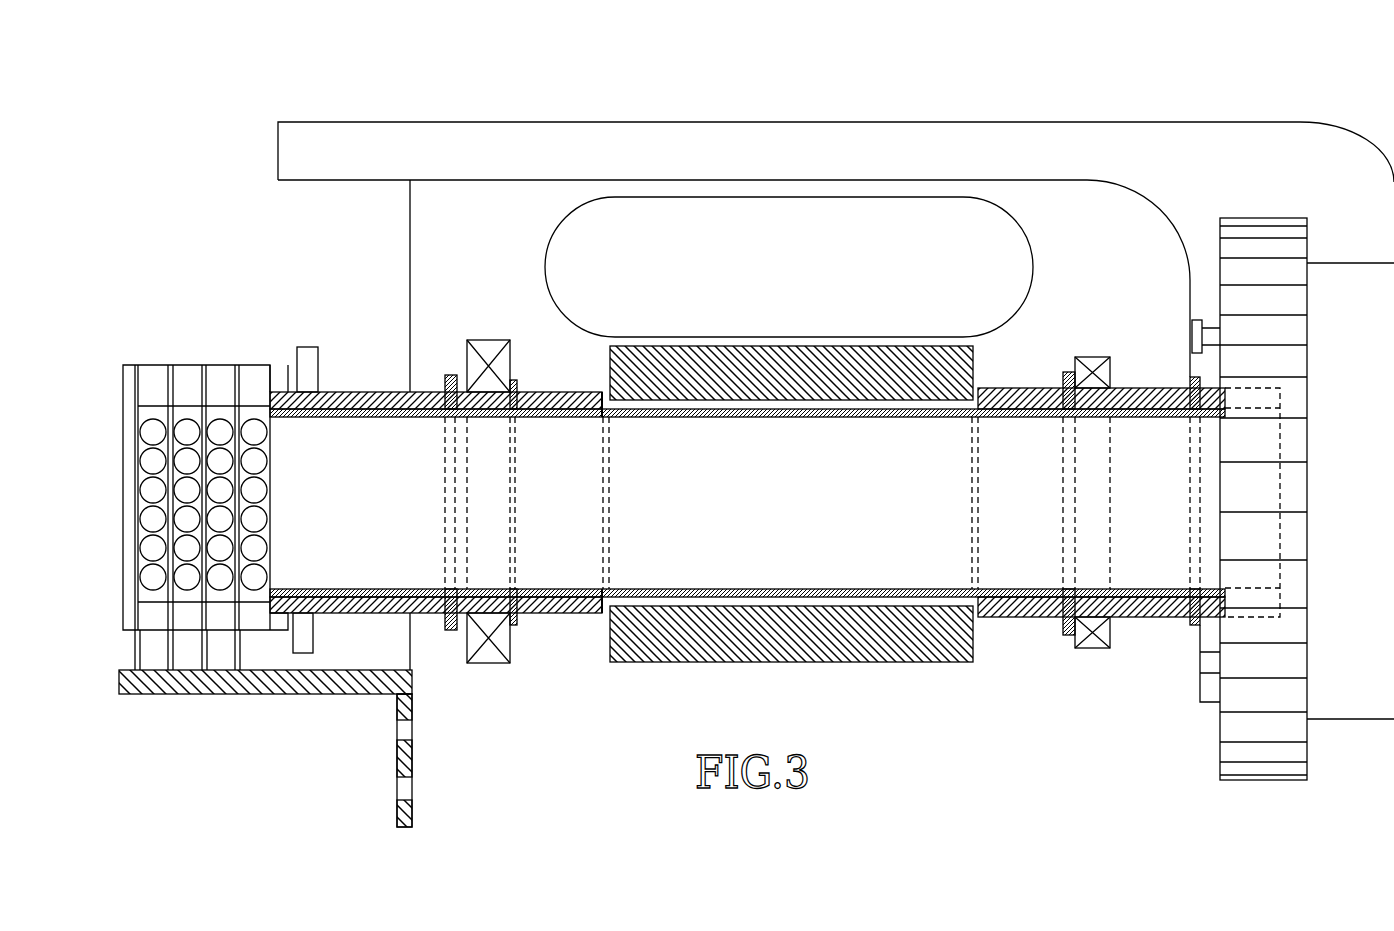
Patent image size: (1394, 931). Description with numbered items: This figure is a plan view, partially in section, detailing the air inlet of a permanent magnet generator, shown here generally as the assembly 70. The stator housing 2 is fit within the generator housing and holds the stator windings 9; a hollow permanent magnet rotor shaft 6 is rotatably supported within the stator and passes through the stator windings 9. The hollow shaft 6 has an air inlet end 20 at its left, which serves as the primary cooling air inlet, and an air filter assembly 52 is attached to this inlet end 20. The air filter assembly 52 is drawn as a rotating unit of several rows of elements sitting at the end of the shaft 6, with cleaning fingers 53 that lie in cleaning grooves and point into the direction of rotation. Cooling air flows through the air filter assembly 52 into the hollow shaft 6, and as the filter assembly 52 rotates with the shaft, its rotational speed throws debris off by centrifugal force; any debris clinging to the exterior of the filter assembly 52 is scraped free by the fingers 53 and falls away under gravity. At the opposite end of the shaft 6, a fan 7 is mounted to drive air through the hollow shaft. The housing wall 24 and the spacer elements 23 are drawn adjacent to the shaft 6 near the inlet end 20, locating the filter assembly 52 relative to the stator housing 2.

The electric machine 70 is at (762, 106).
The stator windings 9 is at (822, 212).
The stator housing 2 is at (1060, 178).
The housing wall 24 is at (410, 200).
The spacer 23 is at (322, 355).
The rotor shaft 6 is at (390, 392).
The air inlet end 20 is at (282, 500).
The air filter assembly 52 is at (153, 372).
The cleaning fingers 53 is at (167, 650).
The fan 7 is at (1255, 745).